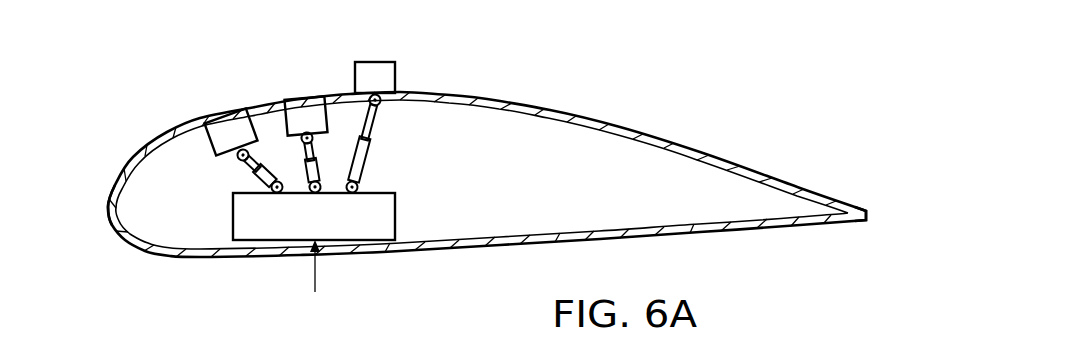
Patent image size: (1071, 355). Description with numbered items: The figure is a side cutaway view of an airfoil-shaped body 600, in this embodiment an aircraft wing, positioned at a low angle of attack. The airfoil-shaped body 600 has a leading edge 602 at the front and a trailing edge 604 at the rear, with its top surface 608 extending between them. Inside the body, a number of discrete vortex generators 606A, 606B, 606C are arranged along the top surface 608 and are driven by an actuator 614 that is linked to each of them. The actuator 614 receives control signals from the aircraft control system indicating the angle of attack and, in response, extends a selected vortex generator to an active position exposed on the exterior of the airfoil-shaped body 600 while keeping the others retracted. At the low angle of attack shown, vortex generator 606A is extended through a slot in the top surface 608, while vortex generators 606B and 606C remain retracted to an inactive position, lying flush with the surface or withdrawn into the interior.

The airfoil-shaped body 600 is at (722, 62).
The leading edge 602 is at (106, 212).
The trailing edge 604 is at (870, 216).
The vortex generator 606A is at (372, 60).
The vortex generator 606B is at (302, 106).
The vortex generator 606C is at (232, 124).
The top surface 608 is at (632, 128).
The actuator 614 is at (232, 212).